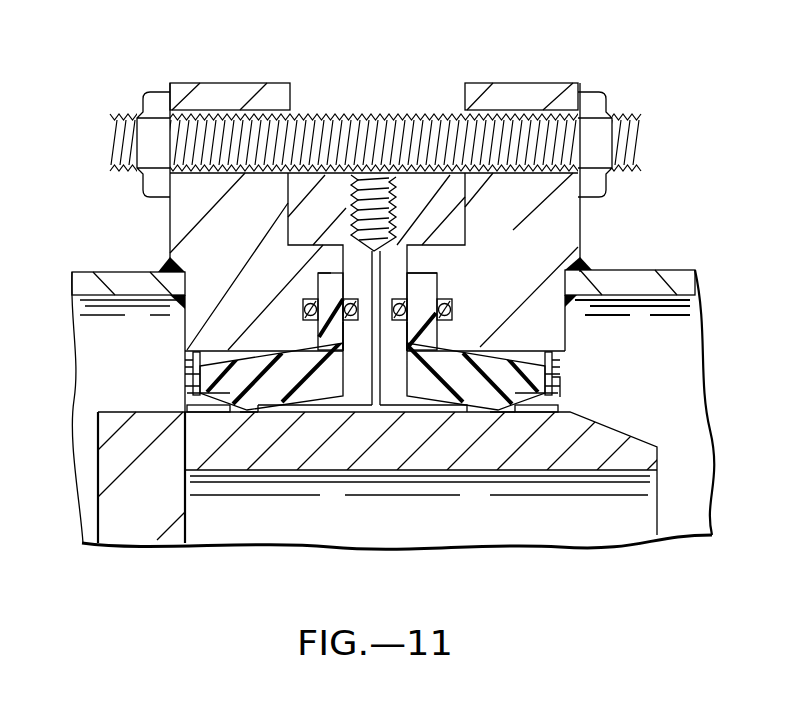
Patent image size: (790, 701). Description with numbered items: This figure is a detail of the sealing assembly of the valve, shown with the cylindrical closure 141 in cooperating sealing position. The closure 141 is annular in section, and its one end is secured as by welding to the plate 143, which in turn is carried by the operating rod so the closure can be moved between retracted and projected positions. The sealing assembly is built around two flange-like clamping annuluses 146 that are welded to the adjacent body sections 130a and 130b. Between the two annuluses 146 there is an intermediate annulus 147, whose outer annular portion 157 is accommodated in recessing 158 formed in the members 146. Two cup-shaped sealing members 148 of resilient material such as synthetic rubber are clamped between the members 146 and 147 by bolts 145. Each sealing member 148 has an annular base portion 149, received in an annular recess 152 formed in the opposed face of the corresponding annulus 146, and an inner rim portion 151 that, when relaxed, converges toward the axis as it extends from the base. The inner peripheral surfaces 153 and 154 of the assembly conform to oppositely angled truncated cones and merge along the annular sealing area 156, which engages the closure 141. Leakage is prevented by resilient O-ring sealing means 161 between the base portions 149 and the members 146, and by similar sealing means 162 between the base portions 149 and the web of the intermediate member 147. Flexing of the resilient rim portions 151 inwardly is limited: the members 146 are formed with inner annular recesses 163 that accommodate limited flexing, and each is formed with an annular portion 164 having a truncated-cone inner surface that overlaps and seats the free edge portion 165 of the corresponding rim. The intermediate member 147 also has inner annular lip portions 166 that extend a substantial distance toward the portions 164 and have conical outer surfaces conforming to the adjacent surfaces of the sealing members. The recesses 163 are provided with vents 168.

The body section 130a is at (123, 272).
The body section 130b is at (628, 270).
The closure 141 is at (628, 508).
The plate 143 is at (172, 510).
The bolts 145 is at (243, 140).
The flange-like clamping annuluses 146 is at (222, 96).
The intermediate annulus 147 is at (313, 185).
The cup-shaped sealing members 148 is at (332, 398).
The annular base portion 149 is at (333, 283).
The inner rim portion 151 is at (247, 402).
The annular recesses 152 is at (318, 290).
The inner peripheral surface 153 is at (320, 396).
The inner peripheral surface 154 is at (190, 417).
The annular sealing area 156 is at (253, 422).
The outer annular portion 157 is at (342, 195).
The recessing 158 is at (288, 191).
The O-ring sealing means 161 is at (303, 306).
The sealing means 162 is at (350, 319).
The inner annular recesses 163 is at (200, 352).
The annular portion 164 is at (203, 393).
The edge portion 165 is at (203, 373).
The inner annular lip portions 166 is at (428, 398).
The vents 168 is at (540, 369).